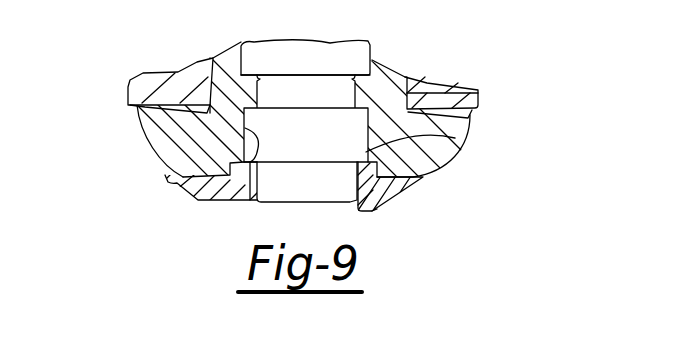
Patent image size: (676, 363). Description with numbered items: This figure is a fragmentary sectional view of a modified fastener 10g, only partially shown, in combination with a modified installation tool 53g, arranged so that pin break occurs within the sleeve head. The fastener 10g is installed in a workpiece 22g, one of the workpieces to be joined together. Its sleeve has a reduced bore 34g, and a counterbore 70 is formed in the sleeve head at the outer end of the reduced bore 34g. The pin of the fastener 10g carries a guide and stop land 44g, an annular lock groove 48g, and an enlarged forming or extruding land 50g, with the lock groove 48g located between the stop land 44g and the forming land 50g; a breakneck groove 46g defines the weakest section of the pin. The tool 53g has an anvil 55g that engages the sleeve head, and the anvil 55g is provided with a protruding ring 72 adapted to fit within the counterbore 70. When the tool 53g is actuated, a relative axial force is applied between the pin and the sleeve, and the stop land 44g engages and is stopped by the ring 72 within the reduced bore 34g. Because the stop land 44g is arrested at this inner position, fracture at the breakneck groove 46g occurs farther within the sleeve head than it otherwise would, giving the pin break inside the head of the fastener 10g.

The fastener 10g is at (469, 148).
The workpiece 22g is at (175, 77).
The lock groove 48g is at (472, 90).
The forming or extruding land 50g is at (332, 73).
The guide and stop land 44g is at (330, 147).
The breakneck groove 46g is at (302, 162).
The reduced bore 34g is at (249, 163).
The installation tool 53g is at (190, 197).
The anvil 55g is at (410, 195).
The protruding ring 72 is at (455, 138).
The counterbore 70 is at (236, 160).